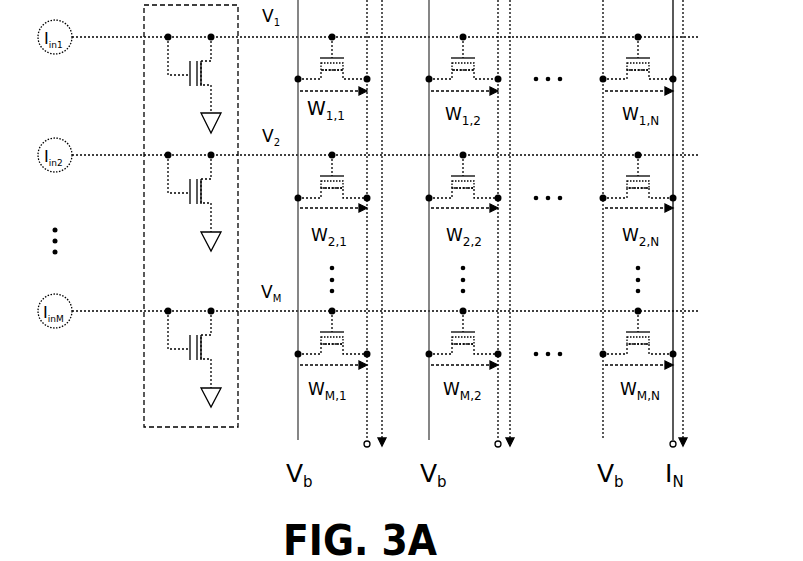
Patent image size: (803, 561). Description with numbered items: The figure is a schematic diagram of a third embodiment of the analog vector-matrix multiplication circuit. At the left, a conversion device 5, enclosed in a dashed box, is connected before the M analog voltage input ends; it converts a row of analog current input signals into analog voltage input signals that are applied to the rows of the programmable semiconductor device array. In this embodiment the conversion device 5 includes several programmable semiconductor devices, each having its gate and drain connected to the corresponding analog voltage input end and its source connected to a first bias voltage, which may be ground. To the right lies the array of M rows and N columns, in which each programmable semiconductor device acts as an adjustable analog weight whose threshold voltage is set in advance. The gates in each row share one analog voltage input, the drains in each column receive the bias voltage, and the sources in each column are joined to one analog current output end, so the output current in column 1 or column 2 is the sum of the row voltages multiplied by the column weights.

The conversion device 5 is at (190, 428).
The output current line I1 of column 1 is at (375, 245).
The output current line I2 of column 2 is at (509, 245).